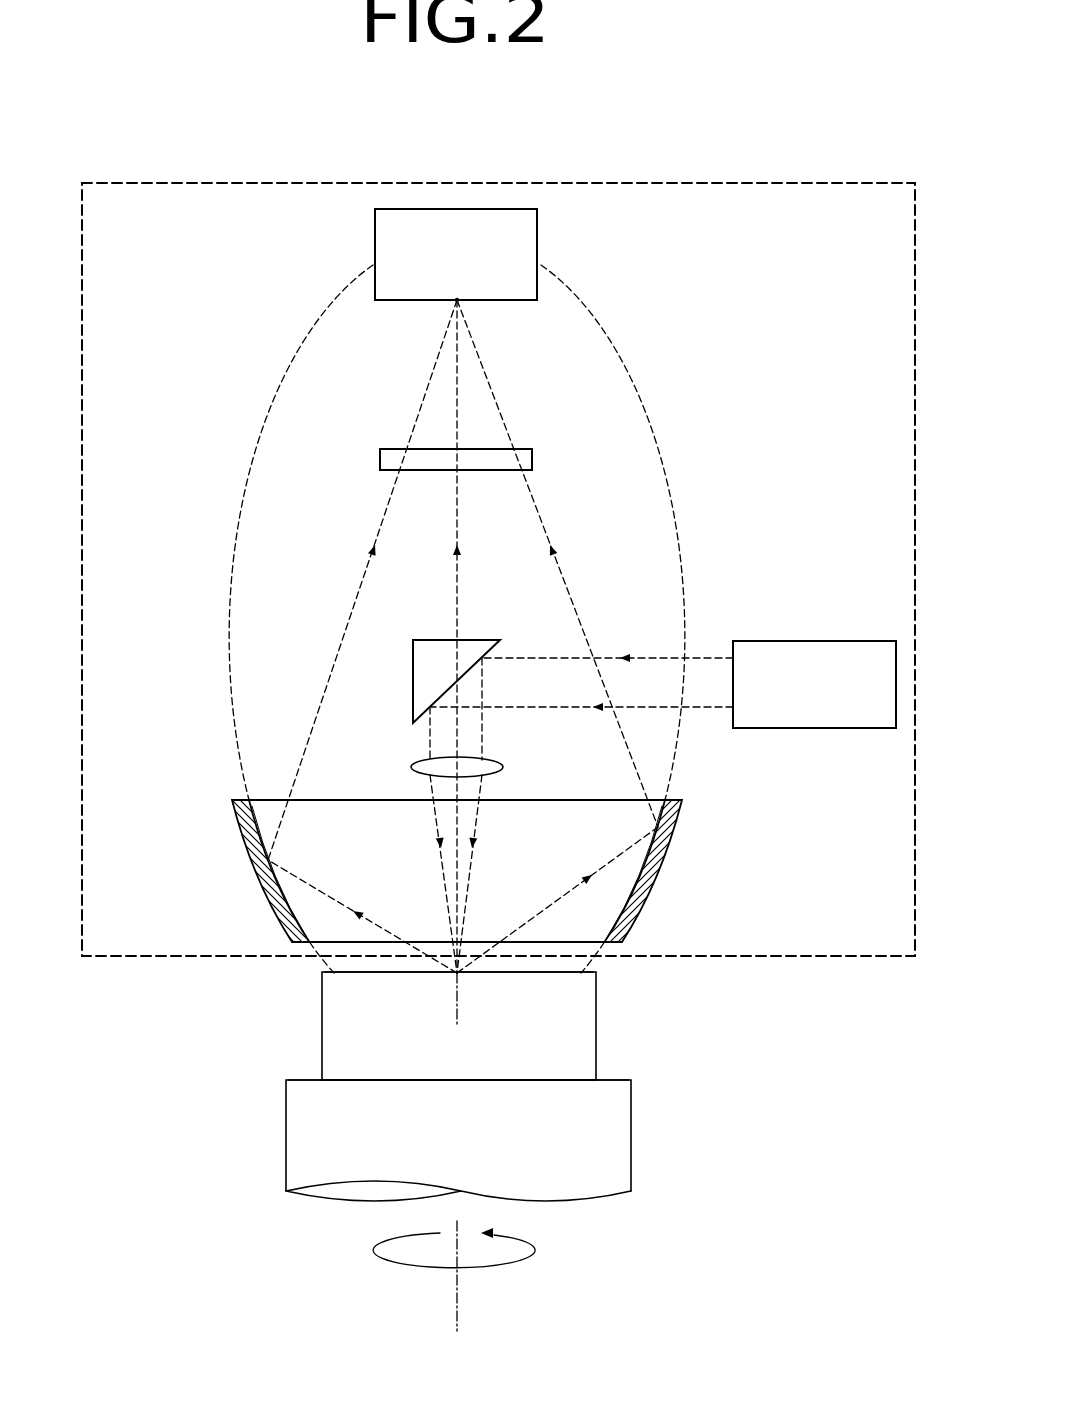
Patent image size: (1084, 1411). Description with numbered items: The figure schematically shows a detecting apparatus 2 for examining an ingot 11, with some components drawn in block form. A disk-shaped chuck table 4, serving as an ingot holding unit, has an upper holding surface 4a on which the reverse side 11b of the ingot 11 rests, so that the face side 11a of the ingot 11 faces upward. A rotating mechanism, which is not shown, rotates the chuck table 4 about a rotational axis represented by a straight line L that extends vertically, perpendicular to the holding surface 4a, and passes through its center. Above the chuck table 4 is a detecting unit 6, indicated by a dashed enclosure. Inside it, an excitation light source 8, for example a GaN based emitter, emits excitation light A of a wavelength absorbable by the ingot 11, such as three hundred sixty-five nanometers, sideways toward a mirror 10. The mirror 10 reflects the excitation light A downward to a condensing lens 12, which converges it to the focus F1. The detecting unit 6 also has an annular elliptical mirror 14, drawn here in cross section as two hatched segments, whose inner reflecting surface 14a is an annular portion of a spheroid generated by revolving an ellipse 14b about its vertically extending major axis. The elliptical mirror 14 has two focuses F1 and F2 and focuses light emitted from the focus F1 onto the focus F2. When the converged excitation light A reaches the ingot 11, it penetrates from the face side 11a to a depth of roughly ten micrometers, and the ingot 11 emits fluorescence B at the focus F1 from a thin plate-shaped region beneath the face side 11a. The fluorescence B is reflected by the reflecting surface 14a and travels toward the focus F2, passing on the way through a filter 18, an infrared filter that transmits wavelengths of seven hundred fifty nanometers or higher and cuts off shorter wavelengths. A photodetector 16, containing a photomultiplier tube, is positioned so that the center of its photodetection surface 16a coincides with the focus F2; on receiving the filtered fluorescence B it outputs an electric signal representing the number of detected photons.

The detecting apparatus 2 is at (772, 153).
The chuck table 4 is at (619, 1170).
The holding surface 4a is at (615, 1080).
The detecting unit 6 is at (458, 183).
The excitation light source 8 is at (810, 641).
The mirror 10 is at (435, 640).
The ingot 11 is at (580, 1010).
The face side 11a is at (377, 974).
The reverse side 11b is at (367, 1078).
The condensing lens 12 is at (503, 765).
The annular elliptical mirror 14 is at (270, 895).
The inner reflecting surface 14a is at (262, 822).
The ellipse 14b is at (632, 378).
The photodetector 16 is at (537, 248).
The photodetection surface 16a is at (410, 300).
The filter 18 is at (532, 460).
The focus F1 is at (461, 974).
The focus F2 is at (460, 300).
The excitation light A is at (651, 657).
The fluorescence B is at (366, 570).
The straight line L is at (458, 1312).